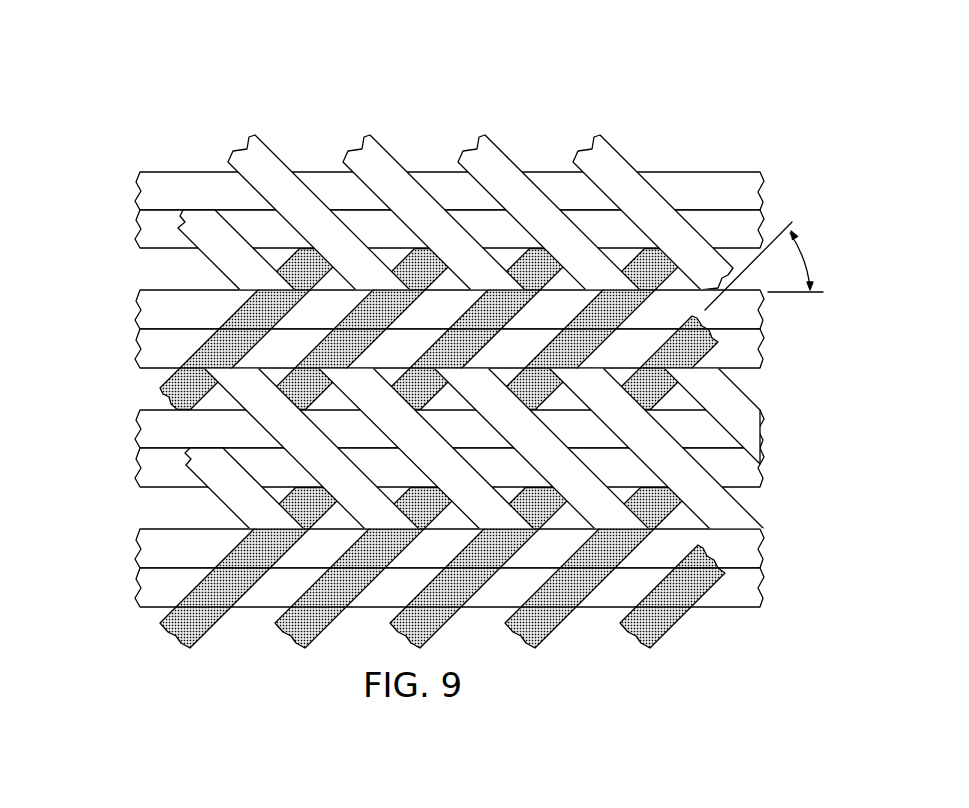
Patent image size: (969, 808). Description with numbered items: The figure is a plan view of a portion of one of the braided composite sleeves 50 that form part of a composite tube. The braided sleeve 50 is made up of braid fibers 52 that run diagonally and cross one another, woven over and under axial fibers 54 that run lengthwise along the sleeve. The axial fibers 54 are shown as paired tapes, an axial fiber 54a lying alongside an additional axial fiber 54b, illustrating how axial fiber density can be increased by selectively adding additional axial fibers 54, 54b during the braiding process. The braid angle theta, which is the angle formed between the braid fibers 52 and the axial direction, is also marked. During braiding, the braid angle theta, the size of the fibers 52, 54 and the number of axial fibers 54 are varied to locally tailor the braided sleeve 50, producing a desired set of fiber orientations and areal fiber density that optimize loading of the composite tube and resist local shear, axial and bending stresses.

The braided sleeve 50 is at (451, 366).
The braid fibers 52 is at (378, 150).
The axial fibers 54 is at (443, 387).
The axial fiber 54a is at (141, 188).
The additional axial fiber 54b is at (141, 230).